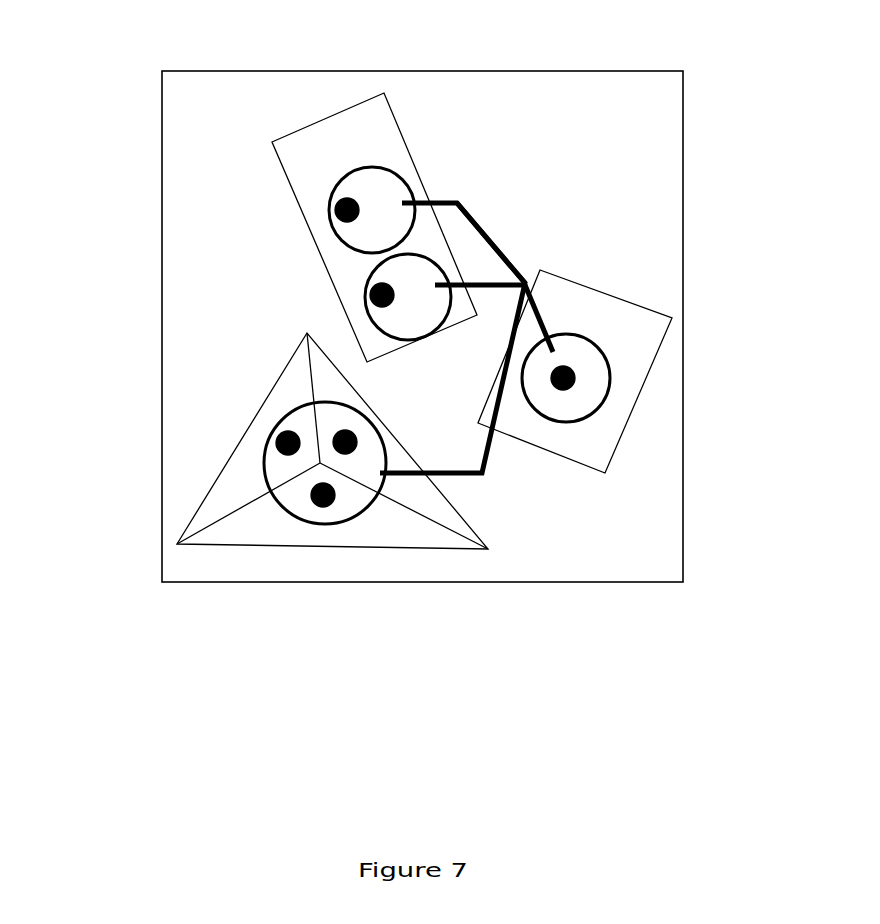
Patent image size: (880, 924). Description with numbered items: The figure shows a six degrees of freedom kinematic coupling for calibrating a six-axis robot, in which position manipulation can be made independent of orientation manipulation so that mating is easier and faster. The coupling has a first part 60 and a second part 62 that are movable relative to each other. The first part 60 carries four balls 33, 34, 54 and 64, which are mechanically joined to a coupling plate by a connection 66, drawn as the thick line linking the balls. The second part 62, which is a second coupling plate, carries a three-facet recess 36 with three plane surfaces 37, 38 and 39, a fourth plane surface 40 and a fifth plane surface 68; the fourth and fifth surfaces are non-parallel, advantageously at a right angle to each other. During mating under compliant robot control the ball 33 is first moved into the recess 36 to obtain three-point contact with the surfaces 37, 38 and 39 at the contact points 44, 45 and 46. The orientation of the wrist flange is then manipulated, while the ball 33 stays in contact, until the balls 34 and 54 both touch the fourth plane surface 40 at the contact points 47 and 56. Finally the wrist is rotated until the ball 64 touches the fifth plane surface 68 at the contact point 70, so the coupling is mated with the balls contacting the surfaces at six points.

The ball 33 is at (372, 497).
The ball 34 is at (385, 180).
The recess 36 is at (287, 555).
The plane surface 37 is at (223, 502).
The plane surface 38 is at (327, 378).
The plane surface 39 is at (322, 533).
The fourth plane surface 40 is at (332, 127).
The contact point 44 is at (335, 440).
The contact point 45 is at (275, 445).
The contact point 46 is at (323, 495).
The contact point 47 is at (335, 205).
The ball 54 is at (377, 318).
The contact point 56 is at (372, 290).
The first part 60 is at (513, 250).
The second part 62 is at (683, 540).
The ball 64 is at (603, 387).
The connection 66 is at (485, 233).
The fifth plane surface 68 is at (602, 302).
The contact point 70 is at (573, 375).